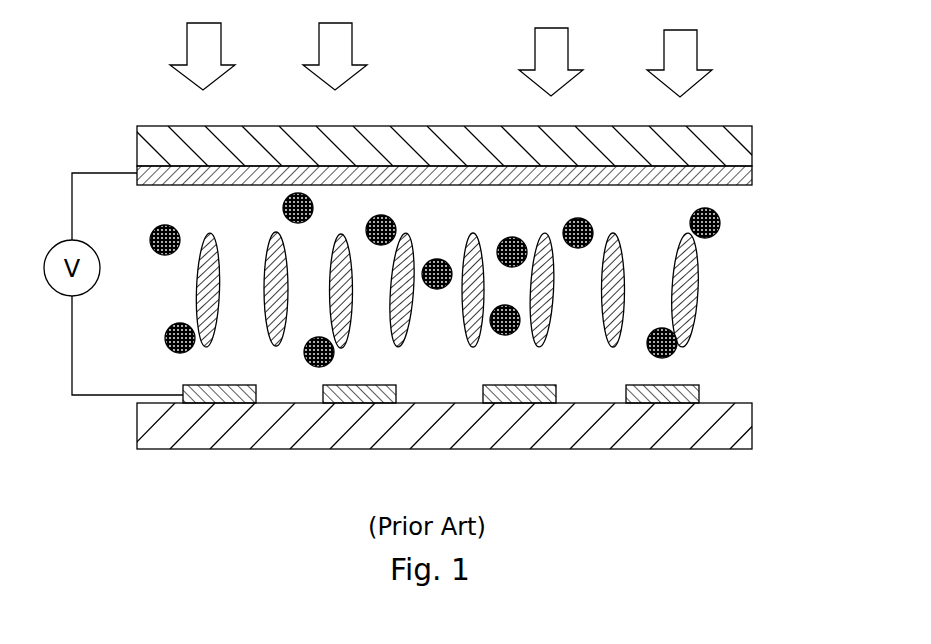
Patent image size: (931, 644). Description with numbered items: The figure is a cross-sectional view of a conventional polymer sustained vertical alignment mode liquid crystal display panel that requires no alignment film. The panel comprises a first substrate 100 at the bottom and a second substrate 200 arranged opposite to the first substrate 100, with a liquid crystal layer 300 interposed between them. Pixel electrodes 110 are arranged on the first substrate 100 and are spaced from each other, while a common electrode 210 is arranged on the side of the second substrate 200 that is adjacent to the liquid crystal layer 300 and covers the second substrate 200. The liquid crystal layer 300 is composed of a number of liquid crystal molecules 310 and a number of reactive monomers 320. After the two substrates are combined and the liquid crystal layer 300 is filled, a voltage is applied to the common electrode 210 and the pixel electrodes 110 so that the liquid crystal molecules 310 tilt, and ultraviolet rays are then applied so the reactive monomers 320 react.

The first substrate 100 is at (725, 427).
The pixel electrodes 110 is at (218, 396).
The second substrate 200 is at (377, 155).
The common electrode 210 is at (490, 173).
The liquid crystal layer 300 is at (493, 276).
The liquid crystal molecules 310 is at (688, 327).
The reactive monomers 320 is at (765, 358).